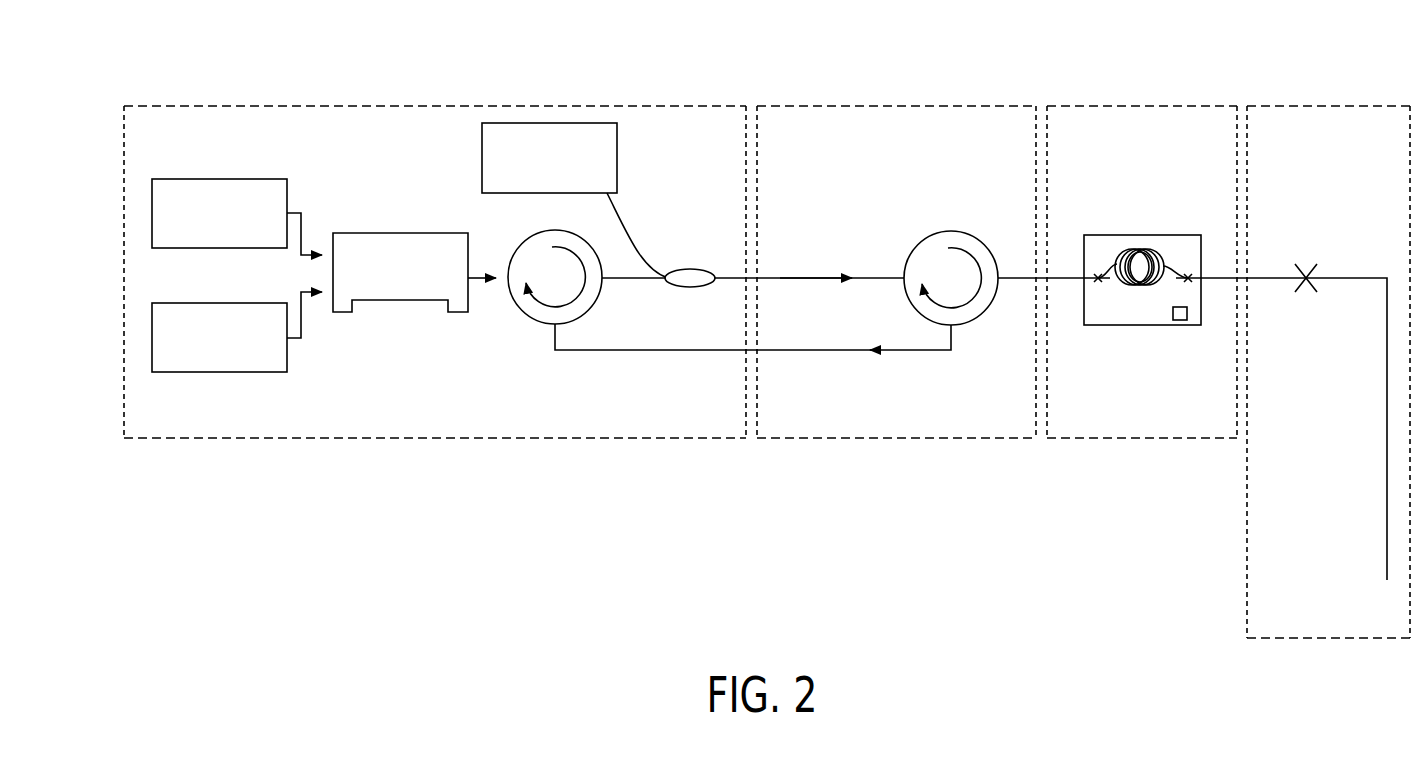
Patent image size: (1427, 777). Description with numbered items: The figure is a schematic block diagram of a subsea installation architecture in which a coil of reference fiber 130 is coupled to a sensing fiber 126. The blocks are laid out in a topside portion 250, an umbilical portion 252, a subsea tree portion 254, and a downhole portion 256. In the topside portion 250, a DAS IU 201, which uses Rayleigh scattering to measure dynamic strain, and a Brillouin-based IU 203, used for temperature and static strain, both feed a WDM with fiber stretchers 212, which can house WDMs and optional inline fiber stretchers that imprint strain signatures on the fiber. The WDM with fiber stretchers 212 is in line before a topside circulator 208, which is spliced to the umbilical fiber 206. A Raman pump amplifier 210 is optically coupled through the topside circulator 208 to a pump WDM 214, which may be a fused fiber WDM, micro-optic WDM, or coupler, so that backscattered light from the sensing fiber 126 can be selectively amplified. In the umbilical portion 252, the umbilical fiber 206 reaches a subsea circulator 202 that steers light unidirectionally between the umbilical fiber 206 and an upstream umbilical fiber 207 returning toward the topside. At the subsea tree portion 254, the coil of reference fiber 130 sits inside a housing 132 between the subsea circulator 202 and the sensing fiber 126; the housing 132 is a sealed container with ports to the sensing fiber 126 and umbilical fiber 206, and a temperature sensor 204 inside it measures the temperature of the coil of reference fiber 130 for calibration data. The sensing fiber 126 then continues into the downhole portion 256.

The sensing fiber 126 is at (1387, 465).
The coil of reference fiber 130 is at (1132, 298).
The housing 132 is at (1165, 235).
The DAS IU 201 is at (220, 372).
The subsea circulator 202 is at (953, 233).
The Brillouin-based IU 203 is at (218, 179).
The temperature sensor 204 is at (1180, 322).
The umbilical fiber 206 is at (807, 278).
The upstream umbilical fiber 207 is at (817, 350).
The topside circulator 208 is at (538, 320).
The Raman pump amplifier 210 is at (482, 163).
The WDM with fiber stretchers 212 is at (395, 312).
The pump WDM 214 is at (688, 270).
The topside portion 250 is at (408, 106).
The umbilical portion 252 is at (887, 105).
The subsea tree portion 254 is at (1125, 105).
The downhole portion 256 is at (1313, 106).